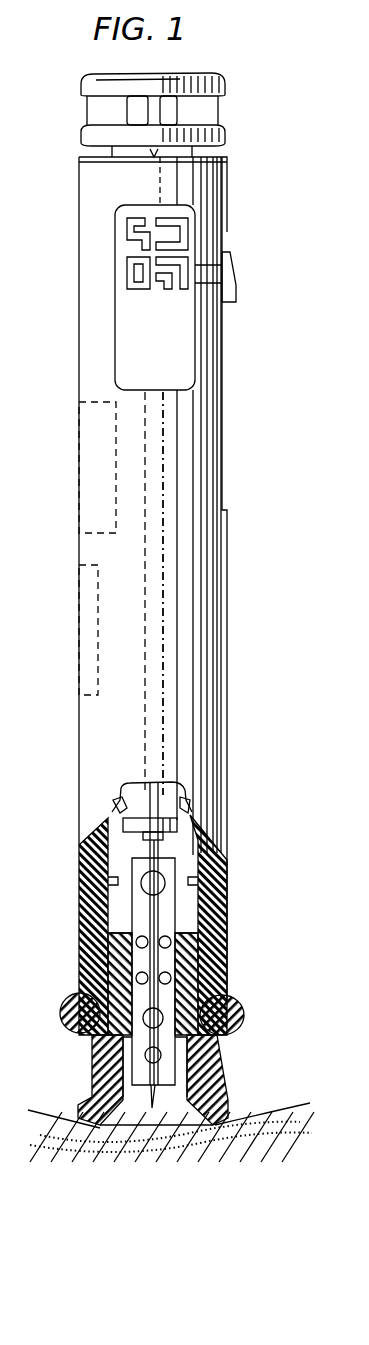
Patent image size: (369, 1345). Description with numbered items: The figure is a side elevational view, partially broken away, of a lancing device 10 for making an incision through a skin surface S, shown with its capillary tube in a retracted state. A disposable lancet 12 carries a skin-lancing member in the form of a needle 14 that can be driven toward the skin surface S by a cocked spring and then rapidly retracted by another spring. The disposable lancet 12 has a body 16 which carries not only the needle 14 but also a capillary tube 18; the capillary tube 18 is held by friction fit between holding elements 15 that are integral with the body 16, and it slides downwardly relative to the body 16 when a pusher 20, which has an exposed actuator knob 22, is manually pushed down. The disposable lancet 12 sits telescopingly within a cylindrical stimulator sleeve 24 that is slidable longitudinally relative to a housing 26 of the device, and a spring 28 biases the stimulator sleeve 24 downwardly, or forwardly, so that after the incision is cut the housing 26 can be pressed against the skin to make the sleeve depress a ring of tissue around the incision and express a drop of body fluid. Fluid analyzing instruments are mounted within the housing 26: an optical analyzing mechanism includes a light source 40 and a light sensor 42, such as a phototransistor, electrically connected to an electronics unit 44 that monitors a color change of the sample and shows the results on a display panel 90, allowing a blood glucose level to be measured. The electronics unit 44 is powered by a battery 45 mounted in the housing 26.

The lancing device 10 is at (244, 465).
The disposable lancet 12 is at (175, 1068).
The needle 14 is at (152, 1100).
The holding elements 15 is at (168, 940).
The body 16 is at (240, 1016).
The capillary tube 18 is at (160, 907).
The pusher 20 is at (160, 575).
The actuator knob 22 is at (237, 276).
The stimulator sleeve 24 is at (92, 1076).
The housing 26 is at (215, 678).
The spring 28 is at (87, 995).
The light source 40 is at (112, 800).
The light sensor 42 is at (192, 810).
The electronics unit 44 is at (87, 635).
The battery 45 is at (95, 470).
The display panel 90 is at (196, 214).
The skin surface S is at (265, 1125).